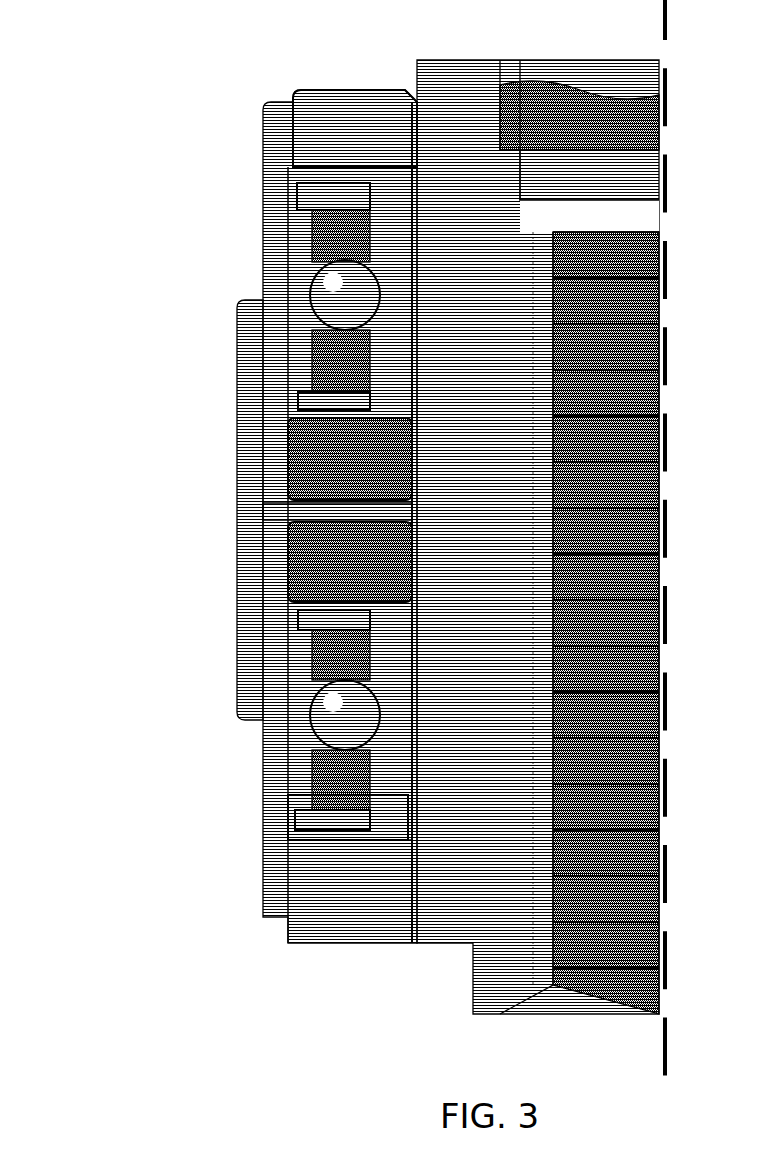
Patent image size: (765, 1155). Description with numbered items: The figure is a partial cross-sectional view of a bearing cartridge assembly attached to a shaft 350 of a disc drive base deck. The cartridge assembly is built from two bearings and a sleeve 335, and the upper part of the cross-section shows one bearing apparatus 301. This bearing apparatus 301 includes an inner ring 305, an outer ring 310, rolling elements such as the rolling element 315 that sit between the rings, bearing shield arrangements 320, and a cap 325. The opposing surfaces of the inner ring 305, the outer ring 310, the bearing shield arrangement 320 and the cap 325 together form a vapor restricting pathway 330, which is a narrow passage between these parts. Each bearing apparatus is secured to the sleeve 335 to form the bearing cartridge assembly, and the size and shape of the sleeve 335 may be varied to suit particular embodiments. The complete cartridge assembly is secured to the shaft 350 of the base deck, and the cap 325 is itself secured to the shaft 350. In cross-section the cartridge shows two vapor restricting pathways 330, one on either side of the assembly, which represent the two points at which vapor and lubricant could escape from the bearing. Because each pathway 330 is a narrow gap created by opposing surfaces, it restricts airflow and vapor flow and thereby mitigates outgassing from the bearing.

The bearing apparatus 301 is at (232, 256).
The inner ring 305 is at (400, 250).
The outer ring 310 is at (293, 358).
The rolling element 315 is at (348, 290).
The bearing shield arrangement 320 is at (330, 395).
The cap 325 is at (355, 118).
The vapor restricting pathway 330 is at (335, 180).
The sleeve 335 is at (262, 512).
The shaft 350 is at (402, 900).